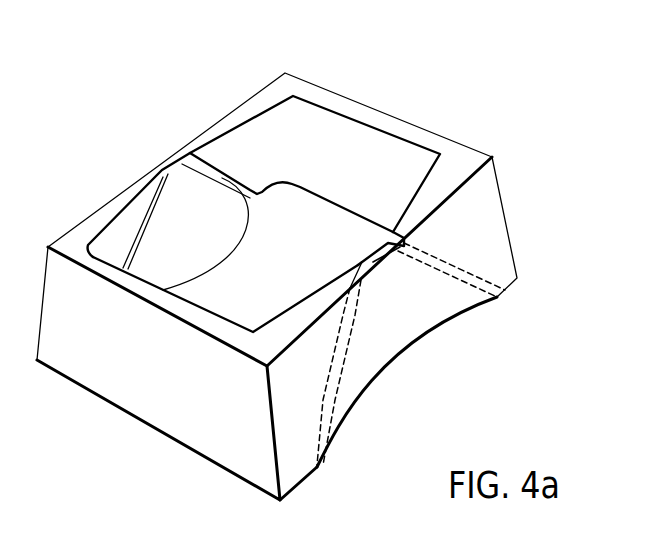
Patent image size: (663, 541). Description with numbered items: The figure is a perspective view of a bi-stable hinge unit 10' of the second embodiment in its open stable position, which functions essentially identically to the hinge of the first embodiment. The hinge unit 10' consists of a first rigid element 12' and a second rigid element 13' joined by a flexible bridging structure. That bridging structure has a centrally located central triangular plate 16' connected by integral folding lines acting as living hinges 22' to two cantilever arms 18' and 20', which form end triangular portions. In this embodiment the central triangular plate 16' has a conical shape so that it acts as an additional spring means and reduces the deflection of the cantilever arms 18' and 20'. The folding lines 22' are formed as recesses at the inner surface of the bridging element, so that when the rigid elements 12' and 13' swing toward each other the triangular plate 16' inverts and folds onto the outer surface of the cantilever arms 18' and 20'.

The bi-stable hinge unit 10' is at (270, 196).
The first rigid element 12' is at (283, 192).
The second rigid element 13' is at (158, 373).
The central triangular plate 16' is at (336, 339).
The cantilever arm 18' is at (398, 386).
The cantilever arm 20' is at (538, 226).
The folding line 22' is at (287, 203).